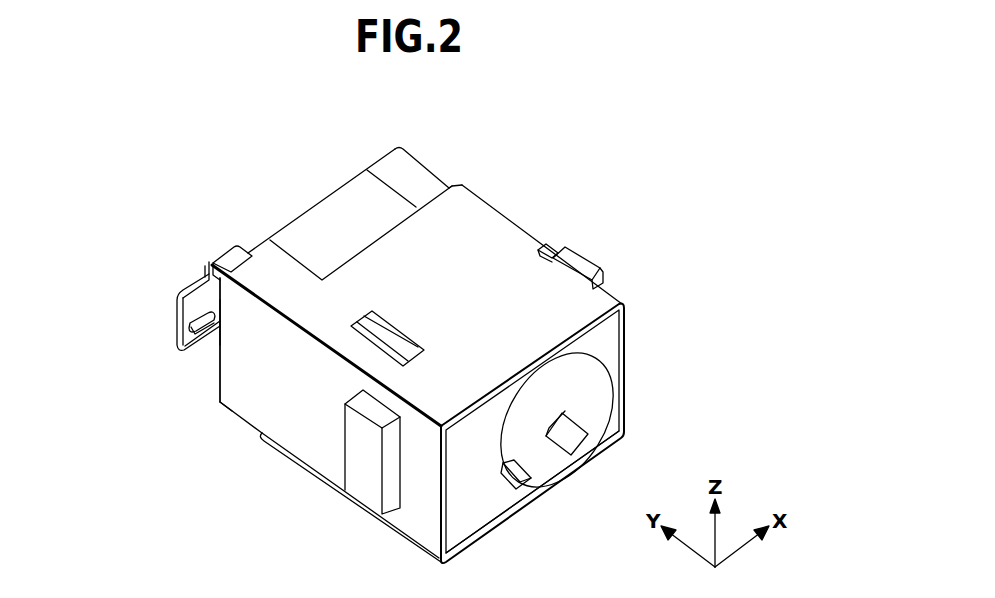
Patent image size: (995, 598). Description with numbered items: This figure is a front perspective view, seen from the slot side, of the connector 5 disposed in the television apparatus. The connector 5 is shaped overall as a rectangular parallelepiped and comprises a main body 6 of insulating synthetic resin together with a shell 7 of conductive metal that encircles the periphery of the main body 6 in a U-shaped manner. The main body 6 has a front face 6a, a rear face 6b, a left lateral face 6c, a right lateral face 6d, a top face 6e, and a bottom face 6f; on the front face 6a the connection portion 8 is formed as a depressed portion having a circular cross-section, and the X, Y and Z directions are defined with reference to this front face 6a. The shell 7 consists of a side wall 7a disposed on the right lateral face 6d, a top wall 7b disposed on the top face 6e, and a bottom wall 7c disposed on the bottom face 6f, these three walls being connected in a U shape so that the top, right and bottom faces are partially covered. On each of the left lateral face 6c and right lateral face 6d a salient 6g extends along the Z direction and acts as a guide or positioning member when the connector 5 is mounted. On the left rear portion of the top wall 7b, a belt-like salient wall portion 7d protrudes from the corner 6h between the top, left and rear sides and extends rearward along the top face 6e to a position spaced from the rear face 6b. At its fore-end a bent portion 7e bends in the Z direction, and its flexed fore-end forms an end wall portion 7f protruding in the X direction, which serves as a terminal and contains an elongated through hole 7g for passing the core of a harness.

The connector 5 is at (594, 152).
The main body 6 is at (352, 181).
The front face 6a is at (484, 515).
The rear face 6b is at (292, 221).
The left lateral face 6c is at (291, 441).
The right lateral face 6d is at (430, 167).
The top face 6e is at (372, 200).
The bottom face 6f is at (228, 284).
The salient 6g is at (362, 492).
The corner 6h is at (218, 342).
The shell 7 is at (519, 230).
The side wall 7a is at (621, 299).
The top wall 7b is at (463, 213).
The bottom wall 7c is at (541, 498).
The salient wall portion 7d is at (278, 294).
The bent portion 7e is at (213, 263).
The end wall portion 7f is at (179, 346).
The elongated through hole 7g is at (188, 320).
The connection portion 8 is at (578, 391).